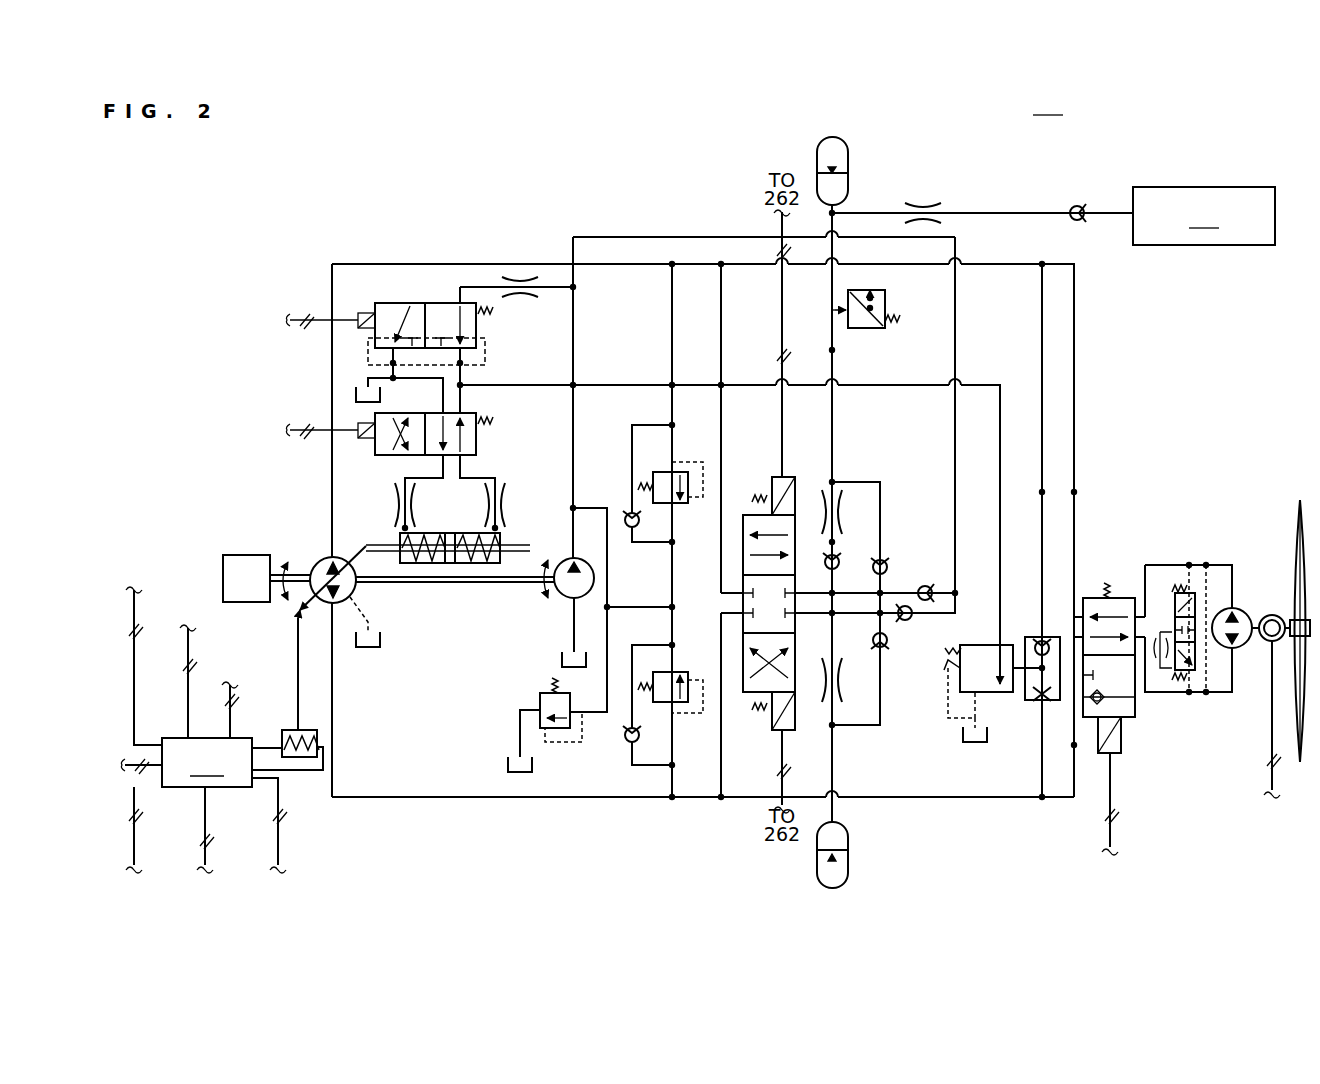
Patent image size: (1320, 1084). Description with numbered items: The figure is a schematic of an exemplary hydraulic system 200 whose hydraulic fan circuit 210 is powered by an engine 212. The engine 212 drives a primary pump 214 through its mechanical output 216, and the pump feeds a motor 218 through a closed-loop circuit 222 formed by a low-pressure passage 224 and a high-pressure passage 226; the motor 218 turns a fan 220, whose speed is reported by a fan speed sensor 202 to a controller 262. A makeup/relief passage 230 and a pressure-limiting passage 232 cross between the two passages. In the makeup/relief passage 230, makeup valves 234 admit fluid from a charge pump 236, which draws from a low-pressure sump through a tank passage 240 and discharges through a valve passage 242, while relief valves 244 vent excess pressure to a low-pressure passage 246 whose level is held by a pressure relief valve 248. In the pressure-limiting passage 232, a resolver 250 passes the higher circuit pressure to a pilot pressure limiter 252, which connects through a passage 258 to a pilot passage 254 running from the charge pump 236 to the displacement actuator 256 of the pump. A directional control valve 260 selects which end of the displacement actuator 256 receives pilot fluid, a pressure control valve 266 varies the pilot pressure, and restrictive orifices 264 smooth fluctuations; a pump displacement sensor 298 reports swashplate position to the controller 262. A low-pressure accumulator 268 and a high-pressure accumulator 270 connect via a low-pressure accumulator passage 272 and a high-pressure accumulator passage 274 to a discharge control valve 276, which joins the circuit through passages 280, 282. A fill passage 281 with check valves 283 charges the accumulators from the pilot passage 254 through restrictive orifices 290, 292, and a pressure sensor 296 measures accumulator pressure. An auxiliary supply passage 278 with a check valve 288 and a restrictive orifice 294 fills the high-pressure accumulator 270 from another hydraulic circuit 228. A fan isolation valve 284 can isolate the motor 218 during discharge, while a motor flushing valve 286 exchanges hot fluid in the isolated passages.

The fan drive system 200 is at (1048, 103).
The fan speed sensor 202 is at (1268, 605).
The hydraulic fan circuit 210 is at (1232, 438).
The engine 212 is at (223, 558).
The primary pump 214 is at (320, 560).
The mechanical output 216 is at (278, 572).
The motor 218 is at (1240, 565).
The fan 220 is at (1298, 505).
The closed-loop circuit 222 is at (1076, 610).
The low-pressure passage 224 is at (1020, 797).
The high-pressure passage 226 is at (985, 264).
The hydraulic circuit 228 is at (1204, 216).
The makeup/relief passage 230 is at (672, 298).
The pressure-limiting passage 232 is at (1042, 345).
The makeup valve 234 is at (632, 505).
The charge pump 236 is at (560, 596).
The tank passage 240 is at (574, 630).
The valve passage 242 is at (607, 560).
The relief valve 244 is at (680, 505).
The low-pressure passage 246 is at (605, 675).
The pressure relief valve 248 is at (545, 700).
The resolver 250 is at (1040, 700).
The pilot pressure limiter 252 is at (995, 692).
The pilot passage 254 is at (485, 362).
The displacement actuator 256 is at (505, 530).
The passage 258 is at (1000, 395).
The directional control valve 260 is at (478, 445).
The controller 262 is at (189, 729).
The restrictive orifice 264 is at (512, 275).
The pressure control valve 266 is at (398, 302).
The low-pressure accumulator 268 is at (848, 860).
The high-pressure accumulator 270 is at (850, 150).
The low-pressure accumulator passage 272 is at (838, 775).
The high-pressure accumulator passage 274 is at (838, 450).
The discharge control valve 276 is at (772, 722).
The auxiliary supply passage 278 is at (1010, 213).
The passage 280 is at (725, 797).
The fill passage 281 is at (958, 325).
The passage 282 is at (721, 298).
The check valve 283 is at (840, 560).
The fan isolation valve 284 is at (1135, 712).
The motor flushing valve 286 is at (1197, 672).
The check valve 288 is at (1085, 205).
The restrictive orifice 290 is at (840, 505).
The restrictive orifice 292 is at (840, 690).
The restrictive orifice 294 is at (925, 205).
The pressure sensor 296 is at (885, 300).
The pump displacement sensor 298 is at (290, 730).